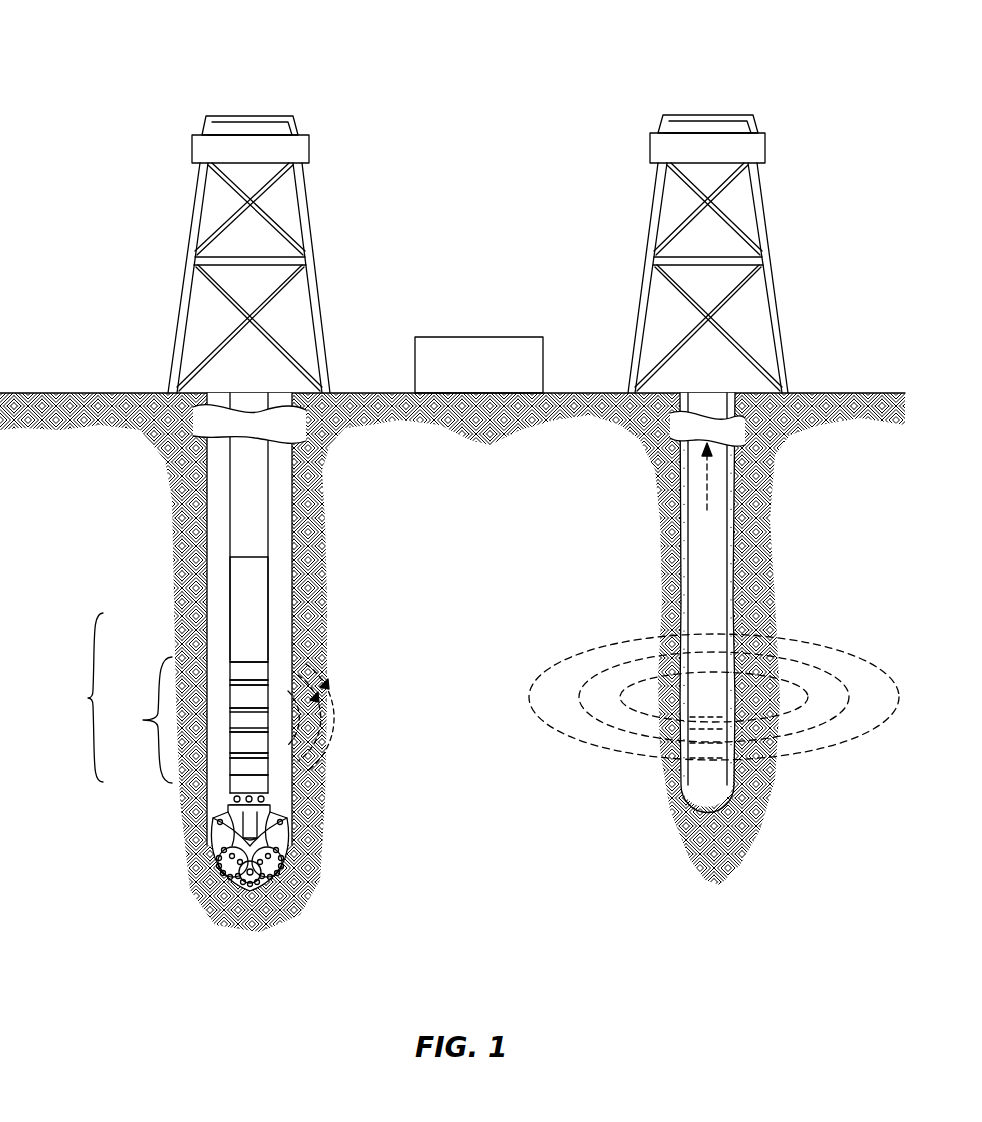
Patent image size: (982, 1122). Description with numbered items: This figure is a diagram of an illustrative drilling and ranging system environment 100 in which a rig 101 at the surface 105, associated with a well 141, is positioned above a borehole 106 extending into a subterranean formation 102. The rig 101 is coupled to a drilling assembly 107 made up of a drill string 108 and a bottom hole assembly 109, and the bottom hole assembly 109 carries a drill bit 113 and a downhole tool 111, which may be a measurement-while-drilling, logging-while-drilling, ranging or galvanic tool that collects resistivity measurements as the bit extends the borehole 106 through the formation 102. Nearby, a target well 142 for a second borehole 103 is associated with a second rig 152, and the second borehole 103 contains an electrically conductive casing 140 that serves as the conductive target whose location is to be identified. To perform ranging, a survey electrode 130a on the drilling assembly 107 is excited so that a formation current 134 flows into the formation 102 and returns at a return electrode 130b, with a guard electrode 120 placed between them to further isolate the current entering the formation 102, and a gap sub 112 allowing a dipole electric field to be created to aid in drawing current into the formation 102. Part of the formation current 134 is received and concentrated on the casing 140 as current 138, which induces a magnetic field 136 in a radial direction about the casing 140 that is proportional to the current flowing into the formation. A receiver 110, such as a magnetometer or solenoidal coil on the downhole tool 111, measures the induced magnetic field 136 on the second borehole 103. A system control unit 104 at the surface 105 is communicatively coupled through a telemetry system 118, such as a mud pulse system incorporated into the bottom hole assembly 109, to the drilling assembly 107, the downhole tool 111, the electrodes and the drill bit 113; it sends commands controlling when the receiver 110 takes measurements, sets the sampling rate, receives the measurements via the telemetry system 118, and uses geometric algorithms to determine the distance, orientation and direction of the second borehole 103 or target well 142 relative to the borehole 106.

The drilling and ranging system environment 100 is at (125, 53).
The rig 101 is at (192, 150).
The subterranean formation 102 is at (483, 445).
The second borehole 103 is at (735, 608).
The system control unit 104 is at (499, 376).
The surface 105 is at (600, 393).
The borehole 106 is at (207, 492).
The drilling assembly 107 is at (155, 603).
The drill string 108 is at (230, 527).
The bottom hole assembly 109 is at (67, 697).
The receiver 110 is at (230, 797).
The downhole tool 111 is at (137, 720).
The gap sub 112 is at (273, 680).
The drill bit 113 is at (212, 843).
The telemetry system 118 is at (270, 580).
The guard electrode 120 is at (270, 717).
The survey electrode 130a is at (270, 764).
The return electrode 130b is at (273, 667).
The formation current 134 is at (336, 731).
The magnetic field 136 is at (700, 715).
The current 138 is at (707, 487).
The casing 140 is at (723, 768).
The well 141 is at (276, 254).
The target well 142 is at (773, 254).
The rig 152 is at (765, 148).